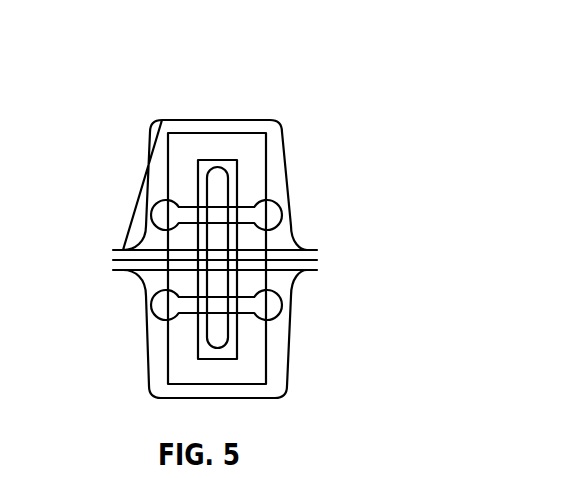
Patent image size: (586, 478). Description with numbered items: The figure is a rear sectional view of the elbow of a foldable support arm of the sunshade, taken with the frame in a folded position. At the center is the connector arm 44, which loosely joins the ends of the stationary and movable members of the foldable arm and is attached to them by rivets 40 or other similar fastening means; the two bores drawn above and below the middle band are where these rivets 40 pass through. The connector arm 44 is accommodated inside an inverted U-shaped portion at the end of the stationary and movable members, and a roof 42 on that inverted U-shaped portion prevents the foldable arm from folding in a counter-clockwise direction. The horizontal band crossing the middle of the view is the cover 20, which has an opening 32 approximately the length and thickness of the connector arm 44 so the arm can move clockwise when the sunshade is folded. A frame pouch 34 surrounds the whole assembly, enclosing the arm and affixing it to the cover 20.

The frame pouch 34 is at (153, 127).
The roof 42 is at (224, 145).
The opening 32 is at (205, 262).
The connector arm 44 is at (218, 193).
The rivets 40 is at (283, 213).
The cover 20 is at (310, 257).